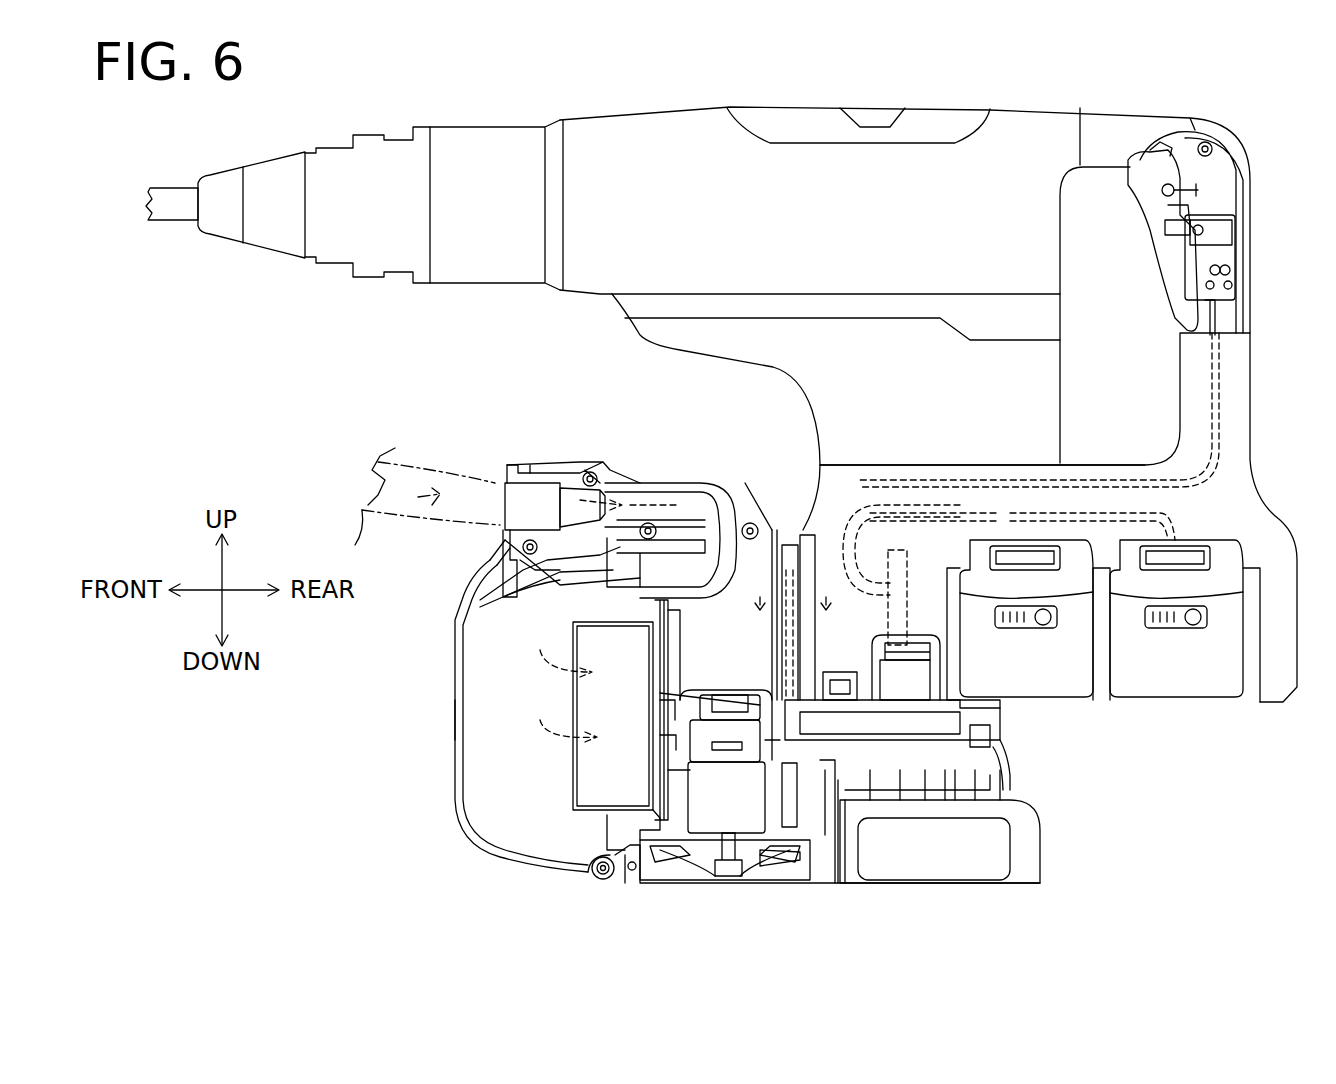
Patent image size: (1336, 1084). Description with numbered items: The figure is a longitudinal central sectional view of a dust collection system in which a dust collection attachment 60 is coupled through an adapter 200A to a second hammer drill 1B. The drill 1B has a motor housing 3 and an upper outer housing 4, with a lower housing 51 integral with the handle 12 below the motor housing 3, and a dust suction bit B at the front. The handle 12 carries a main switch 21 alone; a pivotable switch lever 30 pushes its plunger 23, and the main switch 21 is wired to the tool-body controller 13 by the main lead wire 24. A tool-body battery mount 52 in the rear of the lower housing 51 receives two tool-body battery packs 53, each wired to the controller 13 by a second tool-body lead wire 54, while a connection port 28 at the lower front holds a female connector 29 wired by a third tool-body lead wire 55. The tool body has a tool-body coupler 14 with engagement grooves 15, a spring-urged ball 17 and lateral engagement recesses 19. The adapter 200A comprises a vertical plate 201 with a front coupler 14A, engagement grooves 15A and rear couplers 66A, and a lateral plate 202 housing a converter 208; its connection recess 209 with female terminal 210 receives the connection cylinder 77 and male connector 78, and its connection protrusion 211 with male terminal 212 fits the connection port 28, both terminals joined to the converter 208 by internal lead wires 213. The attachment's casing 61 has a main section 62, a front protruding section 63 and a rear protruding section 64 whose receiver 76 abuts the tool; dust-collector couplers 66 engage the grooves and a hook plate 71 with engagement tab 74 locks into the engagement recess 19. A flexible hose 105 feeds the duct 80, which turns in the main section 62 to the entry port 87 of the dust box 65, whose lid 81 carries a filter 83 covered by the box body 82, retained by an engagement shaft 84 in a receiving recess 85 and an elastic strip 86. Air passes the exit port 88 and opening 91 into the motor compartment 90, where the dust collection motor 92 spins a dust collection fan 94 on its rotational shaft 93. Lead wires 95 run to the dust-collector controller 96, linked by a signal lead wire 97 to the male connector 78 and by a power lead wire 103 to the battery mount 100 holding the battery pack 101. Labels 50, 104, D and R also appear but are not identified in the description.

The bit B is at (168, 195).
The tool holder 50 is at (330, 258).
The upper outer housing 4 is at (598, 285).
The motor housing 3 is at (815, 393).
The hammer drill 1B is at (1252, 135).
The switch lever 30 is at (1170, 238).
The plunger 23 is at (1165, 262).
The main switch 21 is at (1232, 270).
The handle 12 is at (1238, 306).
The main lead wire 24 is at (1226, 360).
The lower housing 51 is at (935, 468).
The tool-body battery mount 52 is at (1102, 548).
The second tool-body lead wire 54 is at (1175, 508).
The tool-body battery pack 53 is at (1208, 660).
The rear coupler 66A is at (852, 548).
The tool-body controller 13 is at (910, 565).
The third tool-body lead wire 55 is at (885, 640).
The engagement recess 19 is at (912, 648).
The engagement tab 74 is at (905, 660).
The adapter 200A is at (783, 545).
The vertical plate 201 is at (788, 560).
The tool-body coupler 14 is at (807, 533).
The engagement groove 15 is at (800, 545).
The engagement groove 15A is at (770, 600).
The front coupler 14A is at (795, 625).
The ball 17 is at (812, 598).
The distance D is at (792, 586).
The dust flow R is at (431, 467).
The flexible hose 105 is at (390, 505).
The dust collection attachment 60 is at (492, 473).
The front protruding section 63 is at (515, 475).
The casing 61 is at (575, 470).
The duct 80 is at (635, 488).
The box body 82 is at (462, 675).
The dust box 65 is at (445, 775).
The elastic strip 86 is at (505, 585).
The main section 62 is at (660, 655).
The filter 83 is at (585, 778).
The entry port 87 is at (662, 665).
The lid 81 is at (668, 672).
The dust-collector coupler 66 is at (660, 693).
The exit port 88 is at (662, 712).
The opening 91 is at (665, 738).
The motor compartment 90 is at (672, 772).
The dust collection motor 92 is at (655, 802).
The dust collecting motor 104 is at (775, 787).
The lead wires 95 is at (706, 690).
The female connector 29 is at (830, 720).
The signal lead wire 97 is at (798, 765).
The dust collection fan 94 is at (700, 876).
The rotational shaft 93 is at (728, 878).
The dust-collector controller 96 is at (787, 860).
The receiving recess 85 is at (603, 880).
The engagement shaft 84 is at (624, 883).
The power lead wire 103 is at (833, 860).
The rear protruding section 64 is at (844, 876).
The female terminal 210 is at (1000, 730).
The lateral plate 202 is at (970, 700).
The connection recess 209 is at (992, 740).
The connection cylinder 77 is at (1005, 760).
The male connector 78 is at (1008, 775).
The battery mount 100 is at (1015, 795).
The battery pack 101 is at (1040, 848).
The converter 208 is at (920, 820).
The male terminal 212 is at (900, 800).
The internal lead wire 213 is at (1000, 800).
The connection protrusion 211 is at (925, 800).
The connection port 28 is at (945, 800).
The receiver 76 is at (955, 800).
The hook plate 71 is at (975, 800).